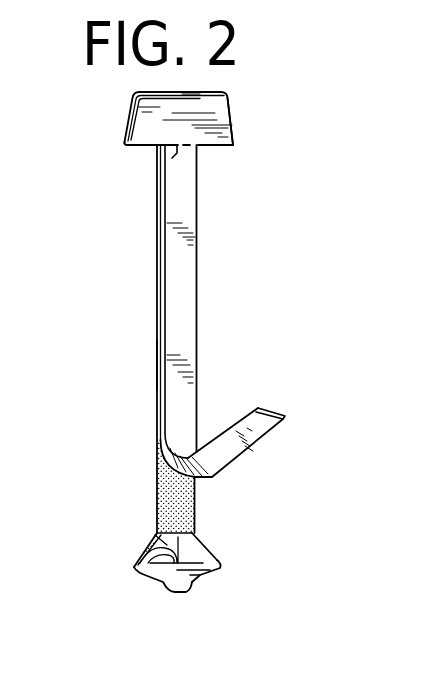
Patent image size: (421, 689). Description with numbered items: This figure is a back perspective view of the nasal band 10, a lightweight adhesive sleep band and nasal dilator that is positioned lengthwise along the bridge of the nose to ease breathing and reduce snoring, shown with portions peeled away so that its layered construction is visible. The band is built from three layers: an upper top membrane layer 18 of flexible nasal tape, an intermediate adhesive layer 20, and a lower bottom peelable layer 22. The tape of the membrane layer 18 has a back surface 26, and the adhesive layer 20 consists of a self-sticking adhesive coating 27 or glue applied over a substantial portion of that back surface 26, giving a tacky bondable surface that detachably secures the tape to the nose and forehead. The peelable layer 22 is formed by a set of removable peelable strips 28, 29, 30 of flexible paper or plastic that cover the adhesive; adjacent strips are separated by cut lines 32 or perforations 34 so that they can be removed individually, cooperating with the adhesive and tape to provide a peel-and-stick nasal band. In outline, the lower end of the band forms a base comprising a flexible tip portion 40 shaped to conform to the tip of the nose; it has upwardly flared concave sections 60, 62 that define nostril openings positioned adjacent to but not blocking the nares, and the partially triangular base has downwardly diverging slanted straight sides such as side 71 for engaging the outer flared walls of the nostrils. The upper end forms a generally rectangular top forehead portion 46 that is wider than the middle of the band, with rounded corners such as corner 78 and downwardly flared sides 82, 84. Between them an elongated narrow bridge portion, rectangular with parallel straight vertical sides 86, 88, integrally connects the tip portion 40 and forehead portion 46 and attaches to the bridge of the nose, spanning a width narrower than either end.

The nasal band 10 is at (220, 268).
The upper top membrane layer 18 is at (157, 288).
The intermediate adhesive layer 20 is at (188, 488).
The lower bottom peelable layer 22 is at (287, 420).
The back surface 26 is at (190, 223).
The self-sticking adhesive coating 27 is at (185, 515).
The removable peelable strip 28 is at (155, 530).
The removable peelable strip 29 is at (258, 406).
The removable peelable strip 30 is at (222, 118).
The cut line 32 is at (273, 414).
The perforation 34 is at (176, 160).
The flexible tip portion 40 is at (178, 592).
The top forehead portion 46 is at (138, 133).
The upwardly flared concave section 60 is at (217, 567).
The upwardly flared concave section 62 is at (138, 573).
The slanted straight side 71 is at (213, 552).
The rounded corner 78 is at (233, 147).
The downwardly flared side 82 is at (233, 124).
The downwardly flared side 84 is at (125, 118).
The vertical side 86 is at (197, 357).
The vertical side 88 is at (157, 363).